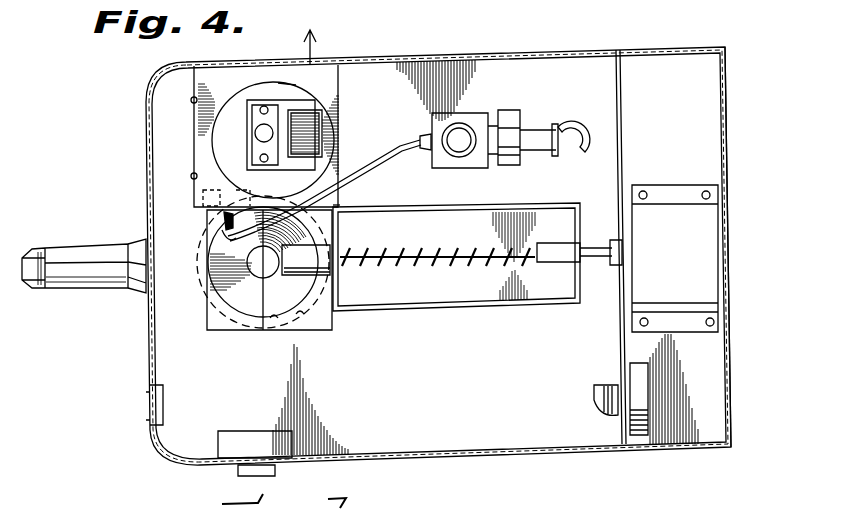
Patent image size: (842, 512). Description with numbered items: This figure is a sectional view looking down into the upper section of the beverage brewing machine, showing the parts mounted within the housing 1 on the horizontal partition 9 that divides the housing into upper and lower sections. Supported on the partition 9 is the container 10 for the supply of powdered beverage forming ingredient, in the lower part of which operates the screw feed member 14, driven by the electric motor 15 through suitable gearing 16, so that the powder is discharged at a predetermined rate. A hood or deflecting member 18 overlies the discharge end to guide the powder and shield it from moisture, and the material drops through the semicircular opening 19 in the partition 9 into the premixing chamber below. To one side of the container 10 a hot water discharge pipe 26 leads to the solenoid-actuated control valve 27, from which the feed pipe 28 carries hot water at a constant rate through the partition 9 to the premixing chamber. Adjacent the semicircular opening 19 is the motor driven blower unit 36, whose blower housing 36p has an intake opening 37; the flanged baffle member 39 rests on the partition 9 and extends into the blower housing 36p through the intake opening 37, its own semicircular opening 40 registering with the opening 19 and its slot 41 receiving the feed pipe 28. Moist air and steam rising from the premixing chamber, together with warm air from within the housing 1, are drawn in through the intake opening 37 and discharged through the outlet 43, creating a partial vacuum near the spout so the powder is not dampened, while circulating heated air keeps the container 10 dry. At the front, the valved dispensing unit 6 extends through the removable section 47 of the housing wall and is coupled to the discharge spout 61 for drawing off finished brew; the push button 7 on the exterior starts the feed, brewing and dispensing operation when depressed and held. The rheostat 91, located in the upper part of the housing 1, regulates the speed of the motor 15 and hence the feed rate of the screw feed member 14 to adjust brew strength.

The housing 1 is at (521, 46).
The valved dispensing unit 6 is at (122, 295).
The push button 7 is at (236, 473).
The horizontal partition 9 is at (542, 247).
The container 10 is at (445, 312).
The screw feed member 14 is at (440, 255).
The electric motor 15 is at (699, 246).
The gearing 16 is at (727, 128).
The hood or deflecting member 18 is at (336, 242).
The semicircular opening 19 is at (304, 312).
The hot water discharge pipe 26 is at (584, 146).
The solenoid-actuated control valve 27 is at (459, 168).
The feed pipe 28 is at (370, 142).
The motor driven blower unit 36 is at (218, 146).
The blower housing 36p is at (200, 182).
The intake opening 37 is at (338, 207).
The flanged baffle member 39 is at (208, 262).
The semicircular opening 40 is at (278, 322).
The slot 41 is at (222, 220).
The outlet 43 is at (318, 56).
The removable section 47 is at (148, 342).
The discharge spout 61 is at (48, 283).
The rheostat 91 is at (598, 390).